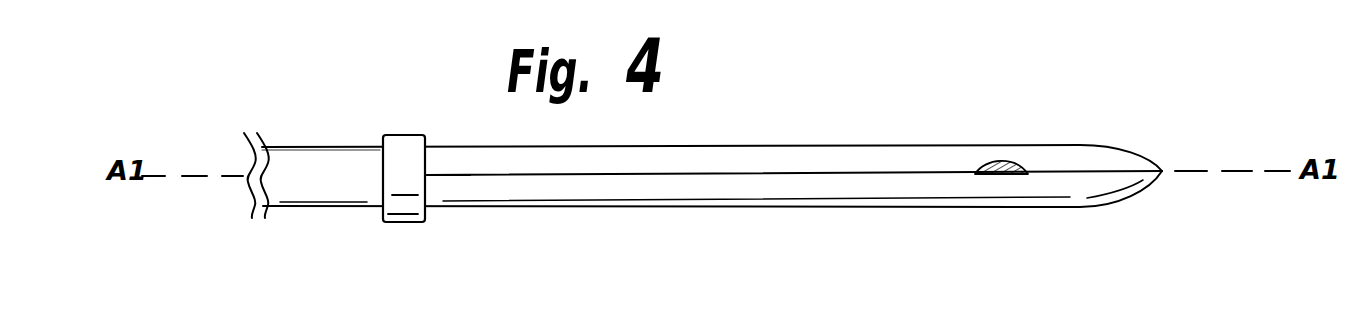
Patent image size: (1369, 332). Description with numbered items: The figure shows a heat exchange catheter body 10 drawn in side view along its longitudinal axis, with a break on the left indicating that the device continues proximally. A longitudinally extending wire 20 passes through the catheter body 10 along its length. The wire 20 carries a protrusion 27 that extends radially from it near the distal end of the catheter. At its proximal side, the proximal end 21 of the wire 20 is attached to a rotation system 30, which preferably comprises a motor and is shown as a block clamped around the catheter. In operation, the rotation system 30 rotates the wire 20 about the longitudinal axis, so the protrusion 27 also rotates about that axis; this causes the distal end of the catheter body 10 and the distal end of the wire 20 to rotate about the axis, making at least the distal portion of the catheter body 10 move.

The heat exchange catheter body 10 is at (857, 146).
The longitudinally extending wire 20 is at (695, 174).
The proximal end of wire 21 is at (427, 175).
The protrusion 27 is at (987, 157).
The rotation system 30 is at (393, 148).